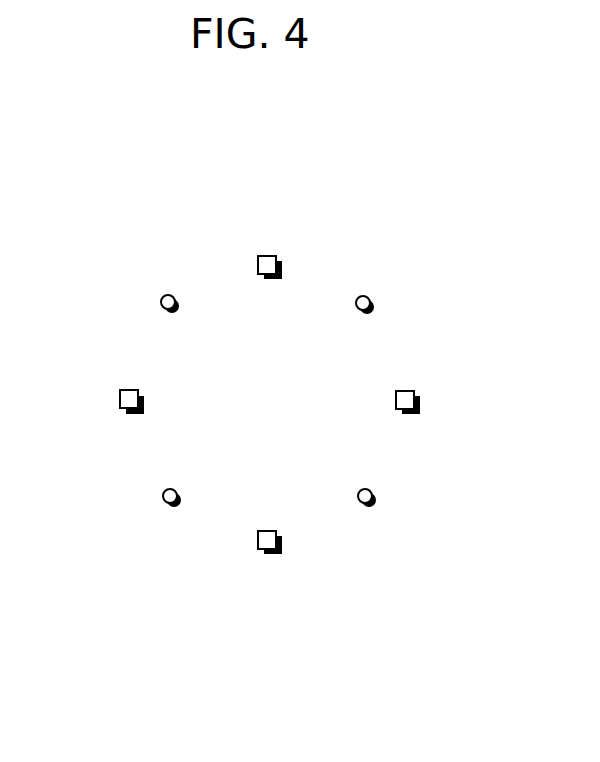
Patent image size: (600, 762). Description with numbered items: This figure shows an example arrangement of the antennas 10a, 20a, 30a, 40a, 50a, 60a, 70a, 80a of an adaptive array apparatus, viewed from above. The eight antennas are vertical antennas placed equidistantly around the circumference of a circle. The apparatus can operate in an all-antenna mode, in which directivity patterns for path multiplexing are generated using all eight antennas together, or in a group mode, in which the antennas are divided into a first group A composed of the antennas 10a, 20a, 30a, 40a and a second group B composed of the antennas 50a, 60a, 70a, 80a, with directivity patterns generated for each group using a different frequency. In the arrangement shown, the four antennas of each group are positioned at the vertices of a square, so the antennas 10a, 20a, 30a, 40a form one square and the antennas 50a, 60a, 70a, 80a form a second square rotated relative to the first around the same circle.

The antenna 10a is at (269, 256).
The antenna 20a is at (412, 391).
The antenna 30a is at (283, 548).
The antenna 40a is at (122, 408).
The antenna 50a is at (368, 296).
The antenna 60a is at (379, 502).
The antenna 70a is at (165, 505).
The antenna 80a is at (160, 300).